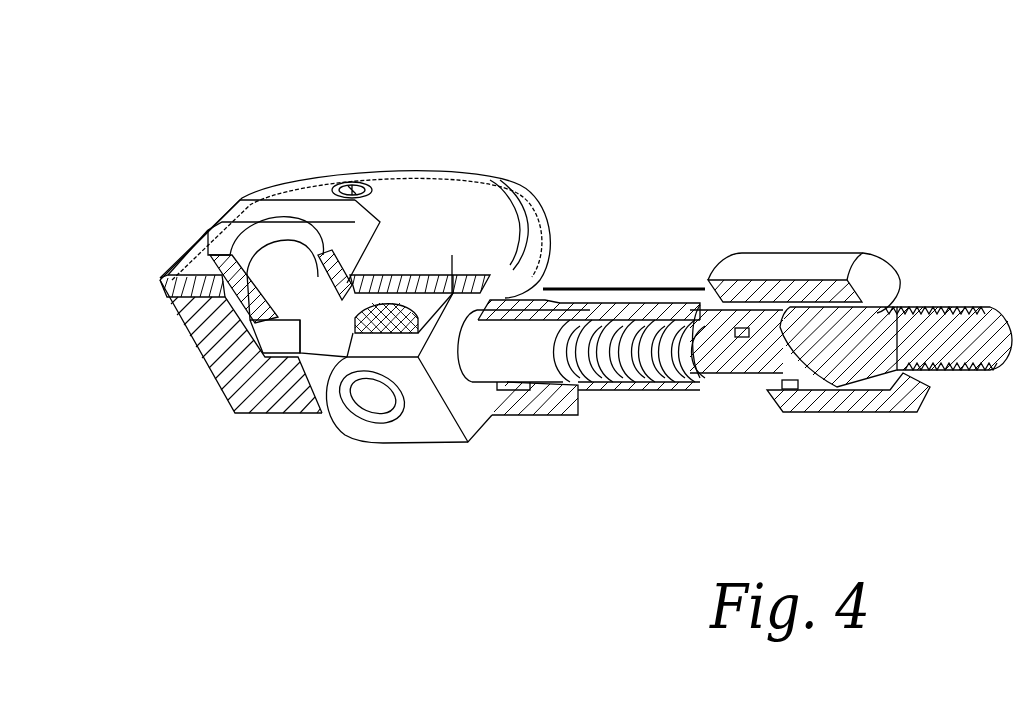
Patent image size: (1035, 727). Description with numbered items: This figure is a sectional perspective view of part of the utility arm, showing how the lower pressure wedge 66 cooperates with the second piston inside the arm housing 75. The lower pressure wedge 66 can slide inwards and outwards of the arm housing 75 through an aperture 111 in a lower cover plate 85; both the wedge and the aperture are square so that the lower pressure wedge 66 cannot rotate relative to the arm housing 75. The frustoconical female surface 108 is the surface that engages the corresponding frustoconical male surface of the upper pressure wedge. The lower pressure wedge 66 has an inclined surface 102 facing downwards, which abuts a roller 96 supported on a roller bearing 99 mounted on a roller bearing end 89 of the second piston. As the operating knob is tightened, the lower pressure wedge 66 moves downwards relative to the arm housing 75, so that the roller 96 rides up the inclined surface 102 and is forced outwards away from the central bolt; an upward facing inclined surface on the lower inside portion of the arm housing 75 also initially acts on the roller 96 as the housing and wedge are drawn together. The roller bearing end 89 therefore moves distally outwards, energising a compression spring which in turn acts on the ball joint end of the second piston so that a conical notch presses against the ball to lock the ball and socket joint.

The lower pressure wedge 66 is at (287, 203).
The aperture 111 is at (373, 235).
The frustoconical female surface 108 is at (258, 237).
The lower cover plate 85 is at (467, 242).
The inclined surface 102 is at (347, 291).
The roller 96 is at (375, 494).
The roller bearing 99 is at (383, 407).
The roller bearing end 89 is at (497, 357).
The arm housing 75 is at (572, 408).